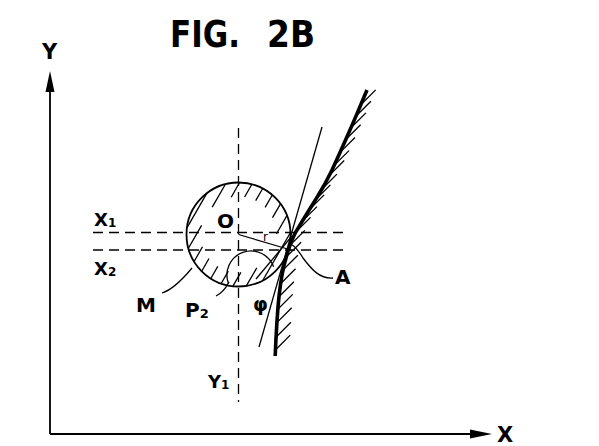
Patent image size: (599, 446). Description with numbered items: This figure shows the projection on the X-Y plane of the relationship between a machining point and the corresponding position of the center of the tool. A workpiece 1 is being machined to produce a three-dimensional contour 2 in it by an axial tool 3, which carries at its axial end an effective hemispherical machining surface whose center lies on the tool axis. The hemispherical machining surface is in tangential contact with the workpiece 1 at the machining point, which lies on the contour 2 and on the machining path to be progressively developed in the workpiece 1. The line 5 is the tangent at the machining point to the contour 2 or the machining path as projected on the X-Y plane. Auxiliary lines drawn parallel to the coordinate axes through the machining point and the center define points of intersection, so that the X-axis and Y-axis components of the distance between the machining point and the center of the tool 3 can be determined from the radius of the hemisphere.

The workpiece 1 is at (358, 121).
The three-dimensional contour 2 is at (357, 109).
The axial tool 3 is at (203, 196).
The tangent 5 is at (318, 135).